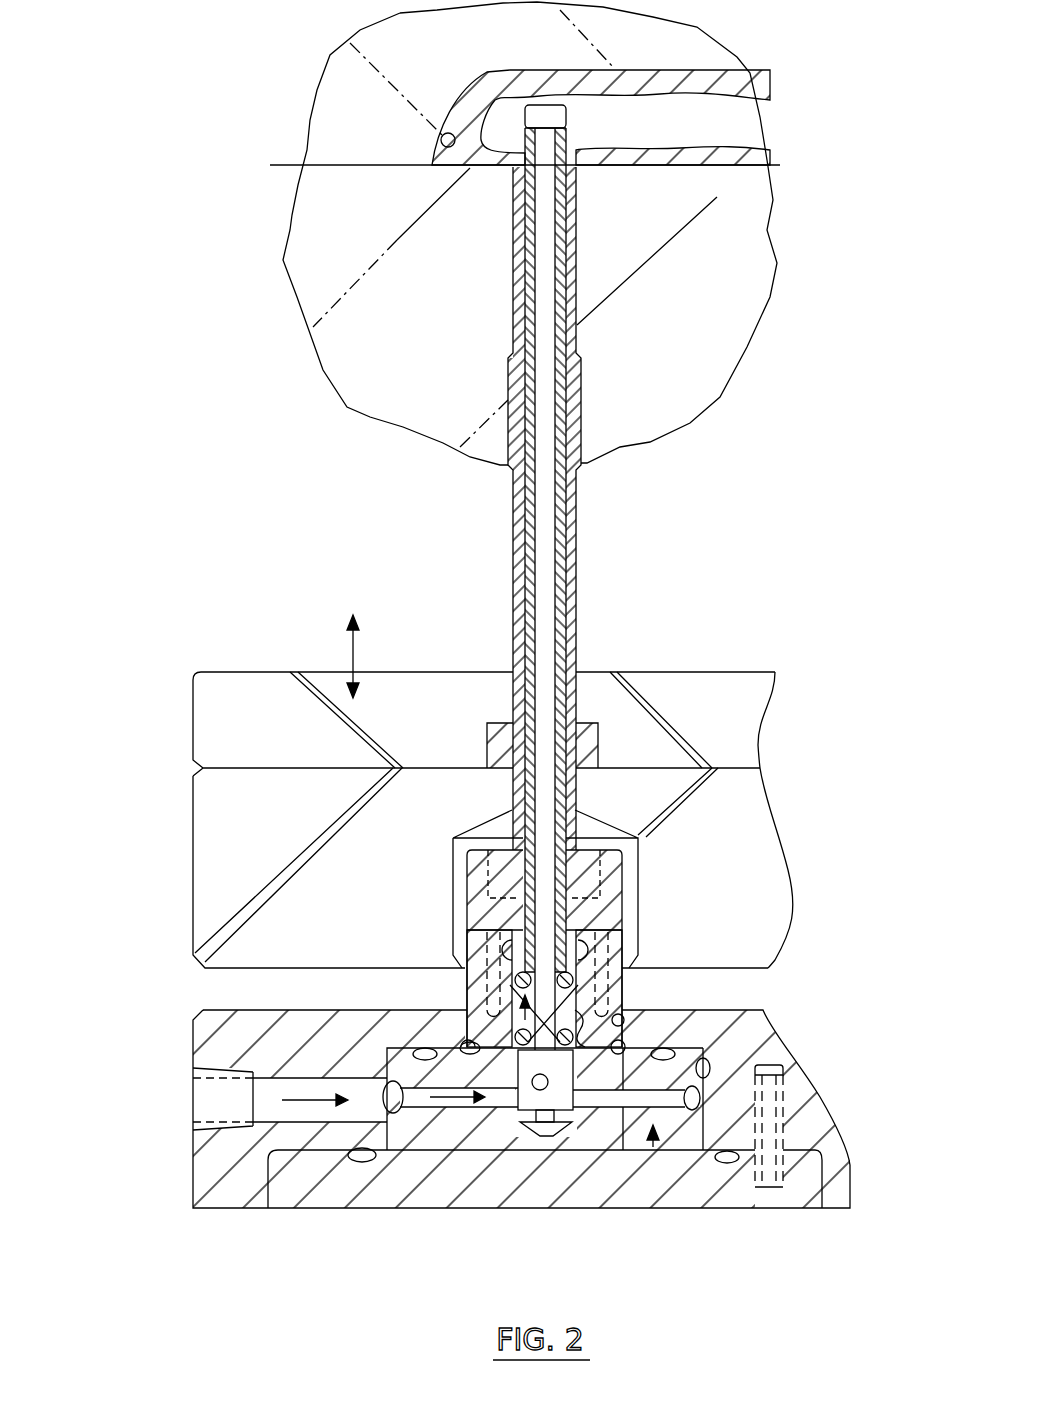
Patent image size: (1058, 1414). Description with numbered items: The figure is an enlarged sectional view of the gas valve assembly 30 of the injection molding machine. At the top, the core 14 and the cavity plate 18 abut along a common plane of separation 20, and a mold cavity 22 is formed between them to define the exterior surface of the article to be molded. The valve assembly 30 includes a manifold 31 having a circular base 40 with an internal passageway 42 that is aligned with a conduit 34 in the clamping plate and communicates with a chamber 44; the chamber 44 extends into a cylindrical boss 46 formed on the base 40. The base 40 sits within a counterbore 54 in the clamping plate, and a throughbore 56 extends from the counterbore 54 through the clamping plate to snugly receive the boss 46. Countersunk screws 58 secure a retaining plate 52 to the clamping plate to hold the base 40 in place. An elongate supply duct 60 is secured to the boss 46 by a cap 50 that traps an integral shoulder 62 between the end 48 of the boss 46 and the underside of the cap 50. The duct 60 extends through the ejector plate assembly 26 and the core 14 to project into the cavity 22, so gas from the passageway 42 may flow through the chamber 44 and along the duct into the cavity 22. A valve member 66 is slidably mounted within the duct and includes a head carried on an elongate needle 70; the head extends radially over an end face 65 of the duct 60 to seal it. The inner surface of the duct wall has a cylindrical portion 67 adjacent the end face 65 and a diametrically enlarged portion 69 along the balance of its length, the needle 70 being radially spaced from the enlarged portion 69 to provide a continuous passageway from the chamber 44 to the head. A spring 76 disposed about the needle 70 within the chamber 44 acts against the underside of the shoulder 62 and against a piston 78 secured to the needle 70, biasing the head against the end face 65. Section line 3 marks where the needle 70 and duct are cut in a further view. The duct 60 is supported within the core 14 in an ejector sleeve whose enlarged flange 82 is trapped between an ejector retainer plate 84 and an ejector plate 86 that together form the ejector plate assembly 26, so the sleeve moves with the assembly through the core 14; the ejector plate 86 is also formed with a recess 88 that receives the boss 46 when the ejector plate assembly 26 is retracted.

The core 14 is at (370, 397).
The cavity plate 18 is at (332, 75).
The plane of separation 20 is at (347, 168).
The mold cavity 22 is at (441, 143).
The valve member 66 is at (536, 96).
The end face 65 is at (603, 175).
The section line 3- 3 is at (503, 218).
The valve assembly 30 is at (486, 567).
The diametrically enlarged portion 69 is at (535, 300).
The elongate needle 70 is at (547, 335).
The cylindrical portion 67 is at (508, 238).
The ejector retainer plate 84 is at (710, 703).
The ejector plate 86 is at (493, 868).
The ejector plate assembly 26 is at (170, 748).
The enlarged flange 82 is at (507, 720).
The recess 88 is at (453, 884).
The supply duct 60 is at (523, 907).
The cap 50 is at (617, 907).
The integral shoulder 62 is at (513, 973).
The cylindrical boss 46 is at (623, 988).
The end of boss 48 is at (607, 977).
The spring 76 is at (515, 987).
The throughbore 56 is at (620, 1022).
The chamber 44 is at (578, 1093).
The piston 78 is at (563, 1097).
The internal passageway 42 is at (496, 1110).
The counterbore 54 is at (704, 1060).
The manifold 31 is at (655, 1150).
The conduit 34 is at (350, 1108).
The circular base 40 is at (422, 1140).
The countersunk screws 58 is at (780, 1198).
The retaining plate 52 is at (813, 1173).